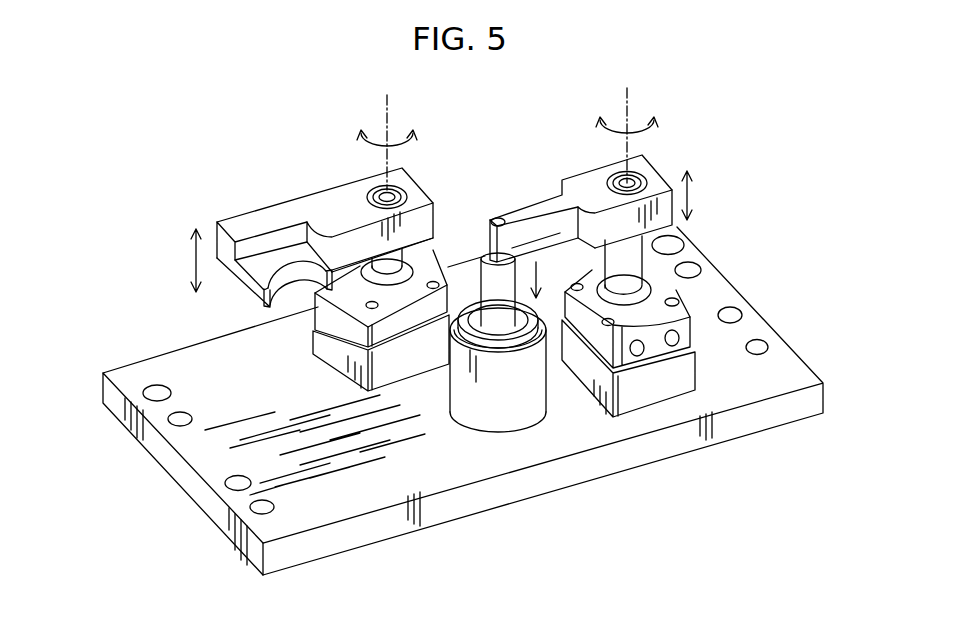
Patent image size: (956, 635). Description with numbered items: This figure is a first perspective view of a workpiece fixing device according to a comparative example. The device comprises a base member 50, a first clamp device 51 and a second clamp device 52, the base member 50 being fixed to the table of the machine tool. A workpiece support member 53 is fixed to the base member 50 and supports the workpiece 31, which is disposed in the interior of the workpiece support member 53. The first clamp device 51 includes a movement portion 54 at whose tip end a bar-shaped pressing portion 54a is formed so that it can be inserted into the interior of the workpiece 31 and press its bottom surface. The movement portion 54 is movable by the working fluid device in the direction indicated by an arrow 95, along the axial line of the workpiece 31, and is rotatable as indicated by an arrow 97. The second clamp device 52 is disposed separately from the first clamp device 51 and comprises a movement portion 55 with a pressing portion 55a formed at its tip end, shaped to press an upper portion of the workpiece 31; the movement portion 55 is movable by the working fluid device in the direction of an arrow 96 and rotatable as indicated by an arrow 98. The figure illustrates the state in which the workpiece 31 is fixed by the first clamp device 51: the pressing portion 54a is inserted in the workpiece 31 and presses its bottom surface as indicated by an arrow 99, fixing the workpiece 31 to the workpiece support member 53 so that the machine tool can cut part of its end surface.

The workpiece 31 is at (517, 337).
The base member 50 is at (215, 458).
The first clamp device 51 is at (588, 251).
The second clamp device 52 is at (350, 197).
The workpiece support member 53 is at (485, 420).
The movement portion 54 is at (562, 205).
The pressing portion 54a is at (490, 283).
The movement portion 55 is at (350, 222).
The pressing portion 55a is at (257, 275).
The arrow 95 is at (693, 196).
The arrow 96 is at (190, 258).
The arrow 97 is at (657, 133).
The arrow 98 is at (413, 143).
The arrow 99 is at (537, 262).